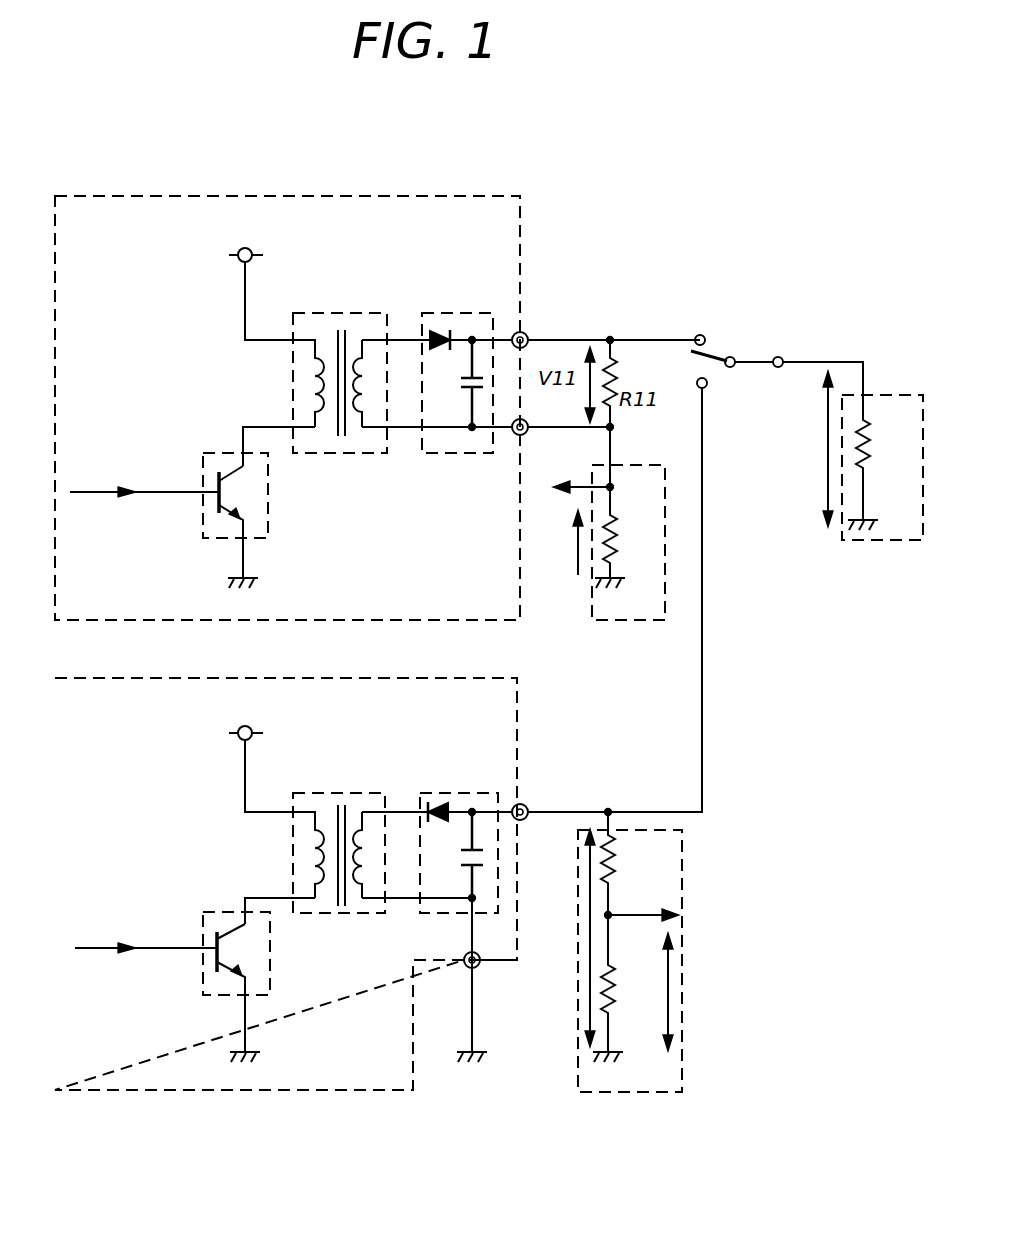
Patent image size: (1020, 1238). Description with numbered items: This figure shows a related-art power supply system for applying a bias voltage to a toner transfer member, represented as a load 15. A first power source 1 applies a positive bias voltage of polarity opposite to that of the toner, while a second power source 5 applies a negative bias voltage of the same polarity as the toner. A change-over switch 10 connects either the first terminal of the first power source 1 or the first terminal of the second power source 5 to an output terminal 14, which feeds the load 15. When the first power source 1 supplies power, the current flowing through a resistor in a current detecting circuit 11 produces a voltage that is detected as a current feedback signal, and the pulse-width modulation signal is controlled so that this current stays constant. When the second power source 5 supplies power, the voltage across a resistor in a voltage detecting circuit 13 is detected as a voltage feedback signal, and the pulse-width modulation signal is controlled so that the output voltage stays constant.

The first power source 1 is at (260, 196).
The second power source 5 is at (270, 678).
The change-over switch 10 is at (720, 352).
The current detecting circuit 11 is at (614, 622).
The voltage detecting circuit 13 is at (684, 1068).
The output terminal 14 is at (781, 356).
The load 15 is at (876, 392).